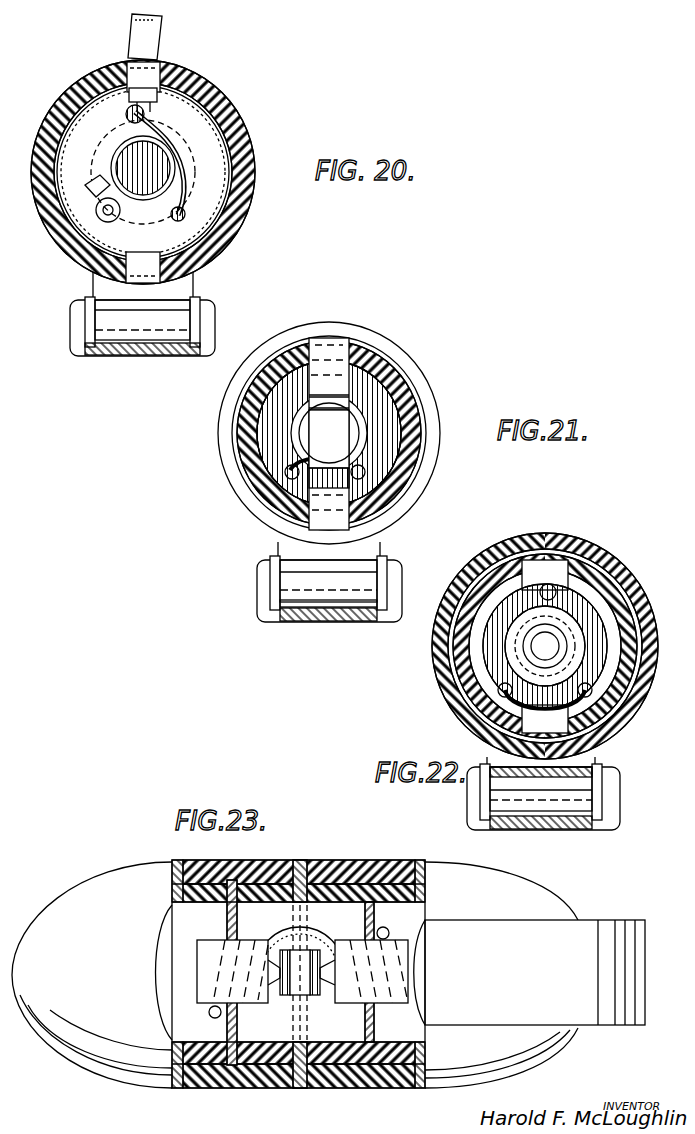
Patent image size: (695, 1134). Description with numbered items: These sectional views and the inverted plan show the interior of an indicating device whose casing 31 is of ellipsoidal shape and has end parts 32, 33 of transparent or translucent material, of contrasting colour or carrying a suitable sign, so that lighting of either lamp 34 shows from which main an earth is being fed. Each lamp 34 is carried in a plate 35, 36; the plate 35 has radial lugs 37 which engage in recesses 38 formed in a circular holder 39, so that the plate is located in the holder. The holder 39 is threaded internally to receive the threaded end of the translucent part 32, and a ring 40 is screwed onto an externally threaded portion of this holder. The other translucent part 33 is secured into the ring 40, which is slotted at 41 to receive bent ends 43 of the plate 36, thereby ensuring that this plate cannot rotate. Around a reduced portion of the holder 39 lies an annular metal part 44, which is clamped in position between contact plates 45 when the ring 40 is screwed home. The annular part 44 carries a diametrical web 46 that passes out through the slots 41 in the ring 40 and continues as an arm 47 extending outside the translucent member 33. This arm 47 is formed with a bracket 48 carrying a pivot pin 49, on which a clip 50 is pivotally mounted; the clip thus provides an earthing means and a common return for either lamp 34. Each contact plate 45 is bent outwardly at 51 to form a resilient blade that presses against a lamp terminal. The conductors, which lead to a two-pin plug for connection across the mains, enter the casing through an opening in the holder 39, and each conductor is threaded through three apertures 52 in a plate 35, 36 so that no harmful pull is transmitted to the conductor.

In FIG. 20, the casing 31 is at (256, 149).
In FIG. 21, the casing 31 is at (440, 433).
In FIG. 22, the casing 31 is at (548, 548).
In FIG. 23, the casing 31 is at (352, 860).
In FIG. 23, the end part 32 is at (152, 878).
In FIG. 23, the end part 33 is at (512, 895).
In FIG. 22, the lamp 34 is at (545, 646).
In FIG. 23, the lamp 34 is at (420, 988).
In FIG. 20, the plate 35 is at (215, 183).
In FIG. 23, the plate 35 is at (232, 1066).
In FIG. 22, the plate 36 is at (600, 580).
In FIG. 23, the plate 36 is at (415, 1085).
In FIG. 20, the radial lugs 37 is at (170, 70).
In FIG. 20, the recesses 38 is at (90, 74).
In FIG. 20, the circular holder 39 is at (226, 117).
In FIG. 21, the circular holder 39 is at (415, 400).
In FIG. 23, the circular holder 39 is at (232, 878).
In FIG. 22, the ring 40 is at (565, 560).
In FIG. 23, the ring 40 is at (303, 1085).
In FIG. 21, the slots 41 is at (355, 358).
In FIG. 22, the slots 41 is at (530, 560).
In FIG. 23, the slots 41 is at (360, 1085).
In FIG. 22, the bent ends 43 is at (500, 572).
In FIG. 23, the annular metal part 44 is at (300, 862).
In FIG. 21, the contact plates 45 is at (350, 335).
In FIG. 23, the contact plates 45 is at (300, 1005).
In FIG. 21, the diametrical web 46 is at (322, 497).
In FIG. 23, the diametrical web 46 is at (302, 952).
In FIG. 20, the arm 47 is at (95, 300).
In FIG. 21, the bracket 48 is at (390, 566).
In FIG. 22, the bracket 48 is at (603, 775).
In FIG. 21, the pivot pin 49 is at (345, 585).
In FIG. 20, the clip 50 is at (140, 350).
In FIG. 21, the clip 50 is at (372, 618).
In FIG. 22, the clip 50 is at (602, 822).
In FIG. 21, the resilient blade 51 is at (352, 400).
In FIG. 23, the resilient blade 51 is at (283, 996).
In FIG. 20, the apertures 52 is at (150, 112).
In FIG. 21, the apertures 52 is at (290, 470).
In FIG. 22, the apertures 52 is at (570, 590).